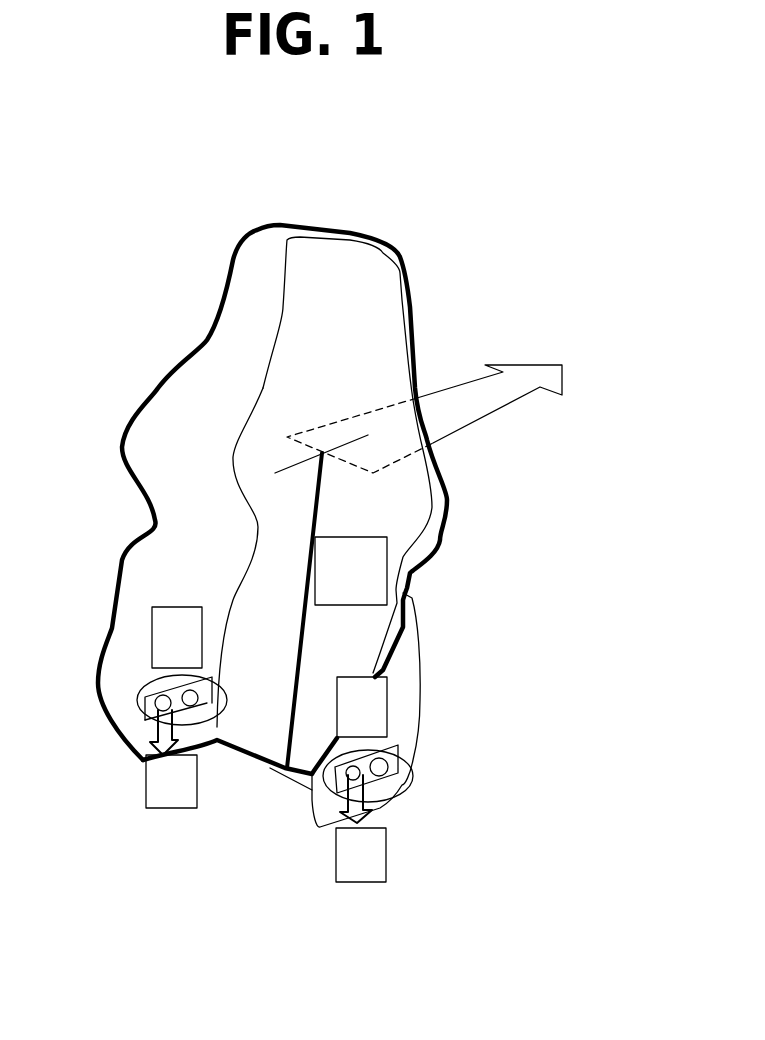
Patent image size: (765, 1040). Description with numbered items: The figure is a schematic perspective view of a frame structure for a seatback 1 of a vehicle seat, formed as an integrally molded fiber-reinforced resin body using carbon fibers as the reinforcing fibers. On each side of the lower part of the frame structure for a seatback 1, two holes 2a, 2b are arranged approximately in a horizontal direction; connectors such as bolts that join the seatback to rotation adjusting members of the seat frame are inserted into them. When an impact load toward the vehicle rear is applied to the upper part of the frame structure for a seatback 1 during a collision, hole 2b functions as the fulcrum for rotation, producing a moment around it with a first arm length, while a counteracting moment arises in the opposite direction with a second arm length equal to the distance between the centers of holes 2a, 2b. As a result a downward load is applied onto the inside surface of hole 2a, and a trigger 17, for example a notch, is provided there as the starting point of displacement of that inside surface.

The frame structure for a seatback 1 is at (357, 229).
The hole 2a is at (147, 700).
The hole 2b is at (217, 727).
The trigger 17 is at (157, 700).